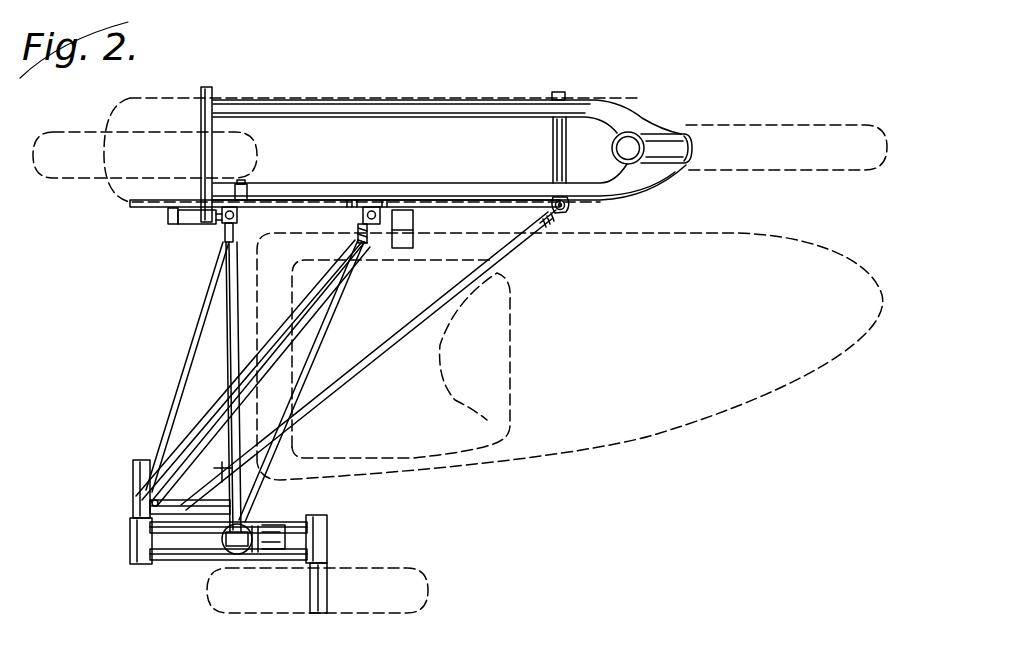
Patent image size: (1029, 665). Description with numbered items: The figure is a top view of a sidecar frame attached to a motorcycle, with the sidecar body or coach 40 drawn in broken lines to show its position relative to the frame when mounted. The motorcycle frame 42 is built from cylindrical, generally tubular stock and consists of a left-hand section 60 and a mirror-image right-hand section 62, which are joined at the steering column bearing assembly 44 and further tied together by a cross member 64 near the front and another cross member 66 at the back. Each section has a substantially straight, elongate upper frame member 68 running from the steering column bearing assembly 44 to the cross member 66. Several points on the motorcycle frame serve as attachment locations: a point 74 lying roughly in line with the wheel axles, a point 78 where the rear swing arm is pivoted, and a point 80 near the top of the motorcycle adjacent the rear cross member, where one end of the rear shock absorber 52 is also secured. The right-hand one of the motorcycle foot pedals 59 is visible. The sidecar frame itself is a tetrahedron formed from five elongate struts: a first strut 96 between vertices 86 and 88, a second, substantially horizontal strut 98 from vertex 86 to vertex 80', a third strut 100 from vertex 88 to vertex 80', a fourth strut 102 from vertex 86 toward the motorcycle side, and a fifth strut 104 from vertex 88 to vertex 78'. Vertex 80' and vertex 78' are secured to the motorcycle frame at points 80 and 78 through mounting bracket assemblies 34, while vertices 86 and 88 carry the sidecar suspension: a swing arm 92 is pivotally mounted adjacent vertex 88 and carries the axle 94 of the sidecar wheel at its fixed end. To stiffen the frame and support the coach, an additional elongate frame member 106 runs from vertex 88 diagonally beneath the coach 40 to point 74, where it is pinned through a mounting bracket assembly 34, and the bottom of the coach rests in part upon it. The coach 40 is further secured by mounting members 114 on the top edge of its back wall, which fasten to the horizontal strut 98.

The mounting bracket assemblies 34 is at (567, 210).
The sidecar body or coach 40 is at (636, 394).
The motorcycle frame 42 is at (360, 108).
The steering column bearing assembly 44 is at (670, 150).
The shock absorber 52 is at (190, 227).
The foot pedals 59 is at (415, 215).
The left-hand section 60 is at (475, 105).
The right-hand section 62 is at (630, 182).
The cross member 64 is at (568, 93).
The cross member 66 is at (212, 88).
The upper frame member 68 is at (285, 107).
The point 74 is at (557, 193).
The point 78 is at (367, 187).
The vertex 78' is at (316, 246).
The point 80 is at (267, 174).
The vertex 80' is at (193, 244).
The vertex 86 is at (240, 512).
The vertex 88 is at (133, 485).
The swing arm 92 is at (193, 560).
The axle 94 is at (330, 565).
The first strut 96 is at (172, 508).
The second strut 98 is at (228, 342).
The third strut 100 is at (190, 378).
The fourth strut 102 is at (347, 287).
The fifth strut 104 is at (307, 312).
The elongate frame member 106 is at (512, 243).
The mounting members 114 is at (218, 466).